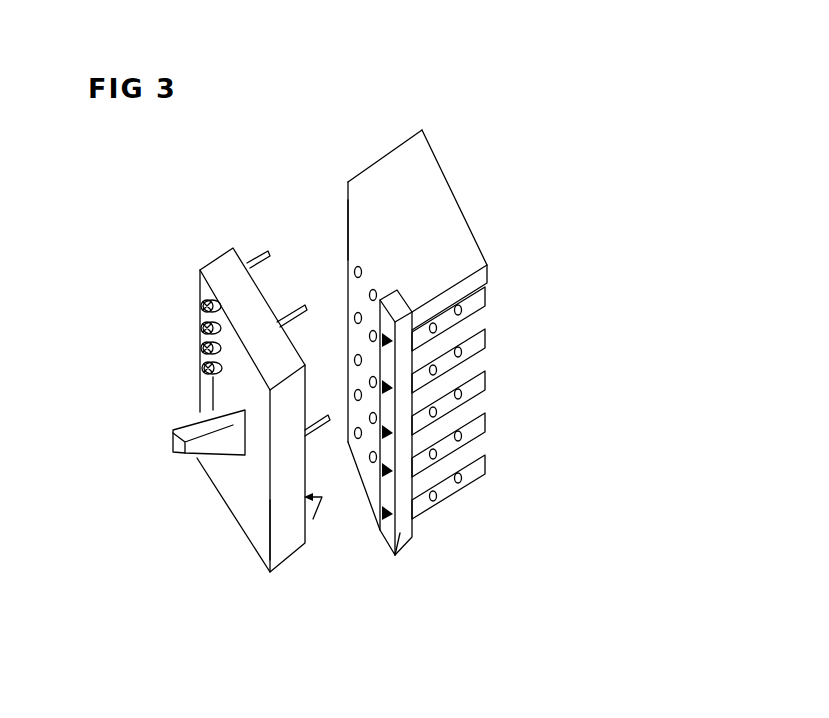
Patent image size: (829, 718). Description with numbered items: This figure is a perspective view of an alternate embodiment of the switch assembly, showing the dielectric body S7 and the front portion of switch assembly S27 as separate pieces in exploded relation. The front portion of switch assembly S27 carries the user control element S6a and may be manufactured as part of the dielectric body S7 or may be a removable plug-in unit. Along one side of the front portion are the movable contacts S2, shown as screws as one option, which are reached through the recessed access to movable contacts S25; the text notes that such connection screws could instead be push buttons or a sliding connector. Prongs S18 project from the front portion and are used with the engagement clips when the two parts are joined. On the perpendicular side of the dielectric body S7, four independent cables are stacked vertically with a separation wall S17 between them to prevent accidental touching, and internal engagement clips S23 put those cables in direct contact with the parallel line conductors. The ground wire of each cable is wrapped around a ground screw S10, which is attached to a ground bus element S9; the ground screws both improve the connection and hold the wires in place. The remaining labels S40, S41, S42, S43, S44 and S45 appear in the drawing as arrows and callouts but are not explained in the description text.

The movable contacts S2 is at (203, 326).
The user control element S6a is at (173, 433).
The dielectric body S7 is at (445, 232).
The ground bus element S9 is at (393, 557).
The ground screws S10 is at (396, 554).
The separation wall S17 is at (470, 286).
The prongs S18 is at (270, 249).
The internal engagement clips S23 is at (483, 473).
The recessed access to movable contacts S25 is at (205, 373).
The front portion of switch assembly S27 is at (247, 303).
The plate assembly S40 is at (576, 301).
The plate top edge S41 is at (395, 148).
The insertion direction S42 is at (268, 529).
The coupling direction S43 is at (369, 592).
The mounting direction S44 is at (362, 224).
The fastening holes S45 is at (374, 294).